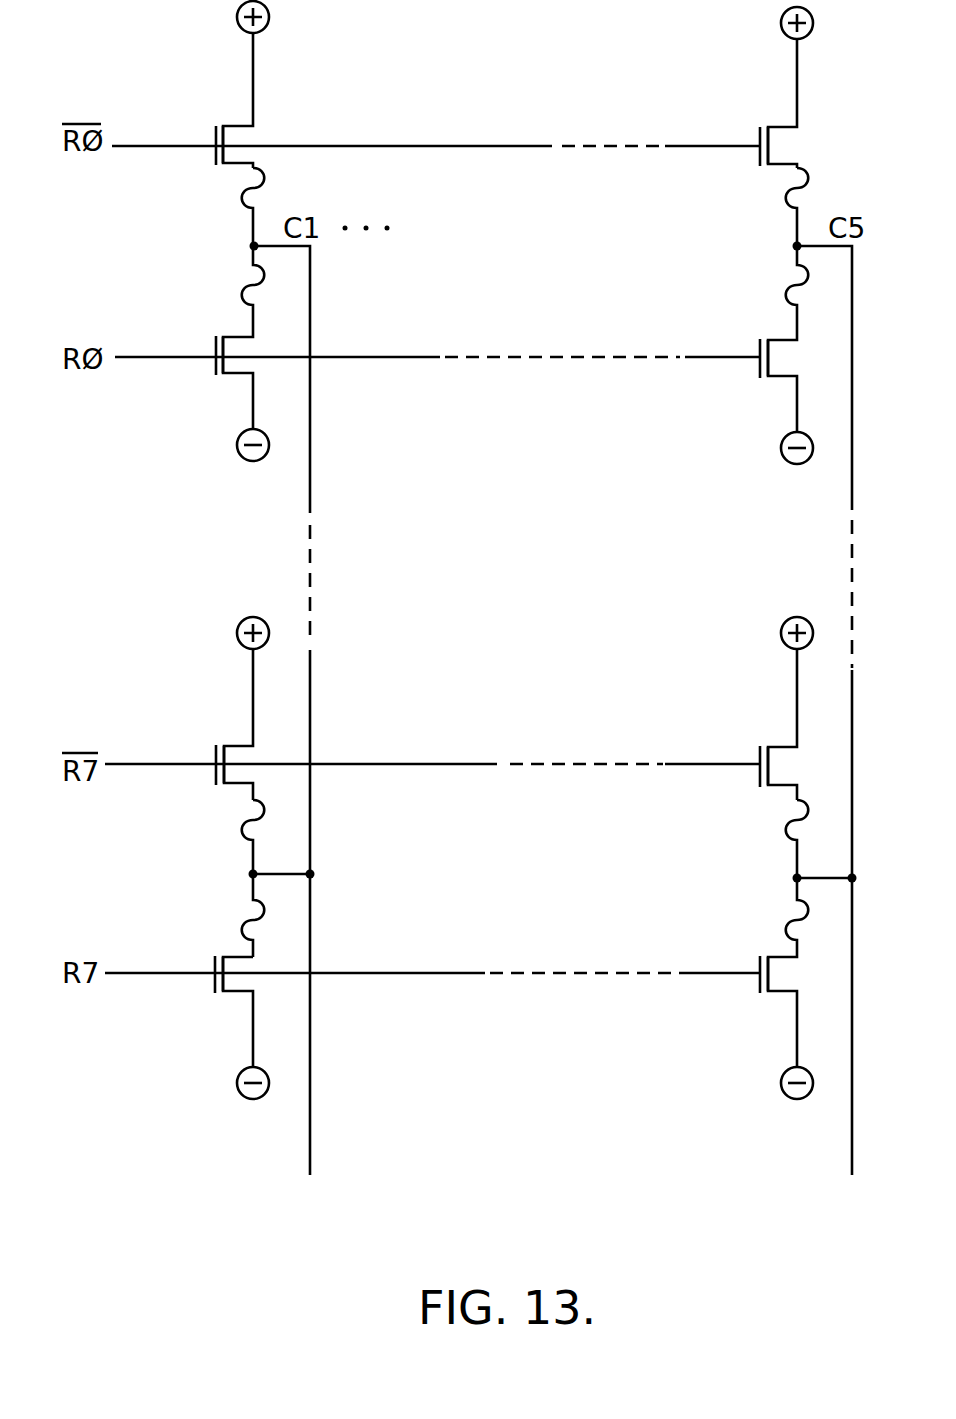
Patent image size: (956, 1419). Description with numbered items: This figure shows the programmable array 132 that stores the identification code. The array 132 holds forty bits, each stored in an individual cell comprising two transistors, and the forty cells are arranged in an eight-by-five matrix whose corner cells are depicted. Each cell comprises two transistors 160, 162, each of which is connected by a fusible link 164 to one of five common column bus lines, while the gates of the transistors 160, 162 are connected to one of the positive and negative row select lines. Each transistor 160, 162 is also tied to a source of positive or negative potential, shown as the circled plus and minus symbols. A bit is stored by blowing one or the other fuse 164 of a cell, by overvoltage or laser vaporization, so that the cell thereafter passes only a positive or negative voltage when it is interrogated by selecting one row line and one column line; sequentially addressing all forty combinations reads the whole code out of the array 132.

The programmable array 132 is at (266, 1163).
The transistor 160 is at (264, 960).
The transistor 162 is at (242, 746).
The fusible link 164 is at (246, 823).